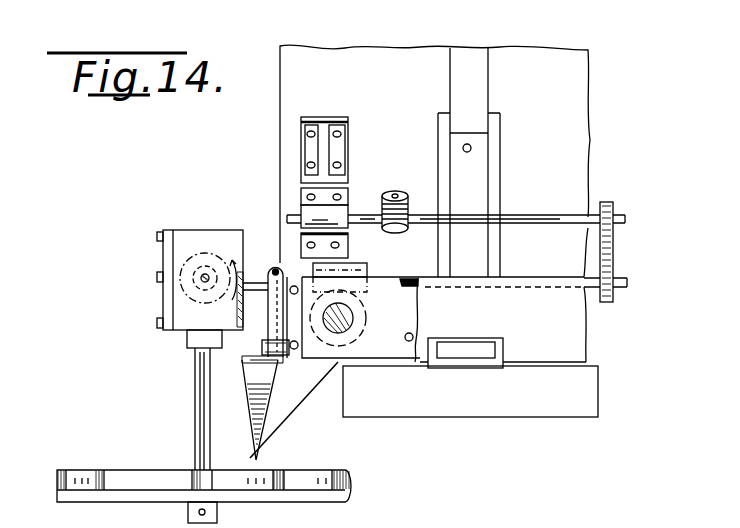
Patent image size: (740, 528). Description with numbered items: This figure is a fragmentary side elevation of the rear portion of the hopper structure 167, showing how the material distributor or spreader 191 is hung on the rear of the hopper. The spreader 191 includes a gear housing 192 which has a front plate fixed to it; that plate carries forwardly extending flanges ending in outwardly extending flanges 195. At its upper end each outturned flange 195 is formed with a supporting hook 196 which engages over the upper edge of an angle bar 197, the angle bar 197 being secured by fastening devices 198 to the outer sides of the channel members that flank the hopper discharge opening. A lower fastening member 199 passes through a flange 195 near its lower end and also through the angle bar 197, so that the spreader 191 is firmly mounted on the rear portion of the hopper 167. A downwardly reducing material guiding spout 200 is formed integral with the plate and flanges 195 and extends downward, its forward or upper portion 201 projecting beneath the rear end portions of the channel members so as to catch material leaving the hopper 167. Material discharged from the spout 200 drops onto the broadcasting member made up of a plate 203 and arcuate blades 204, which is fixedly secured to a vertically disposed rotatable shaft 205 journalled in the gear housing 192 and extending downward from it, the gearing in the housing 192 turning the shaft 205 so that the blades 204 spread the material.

The hopper structure 167 is at (272, 125).
The material distributor or spreader 191 is at (223, 233).
The gear housing 192 is at (181, 230).
The outwardly extending flanges 195 is at (260, 362).
The supporting hook 196 is at (276, 263).
The angle bar 197 is at (296, 363).
The fastening devices 198 is at (313, 292).
The lower fastening member 199 is at (260, 353).
The material guiding spout 200 is at (285, 417).
The forward or upper portion of the spout 201 is at (313, 373).
The plate 203 is at (323, 503).
The arcuate blades 204 is at (355, 456).
The vertically disposed rotatable shaft 205 is at (197, 422).